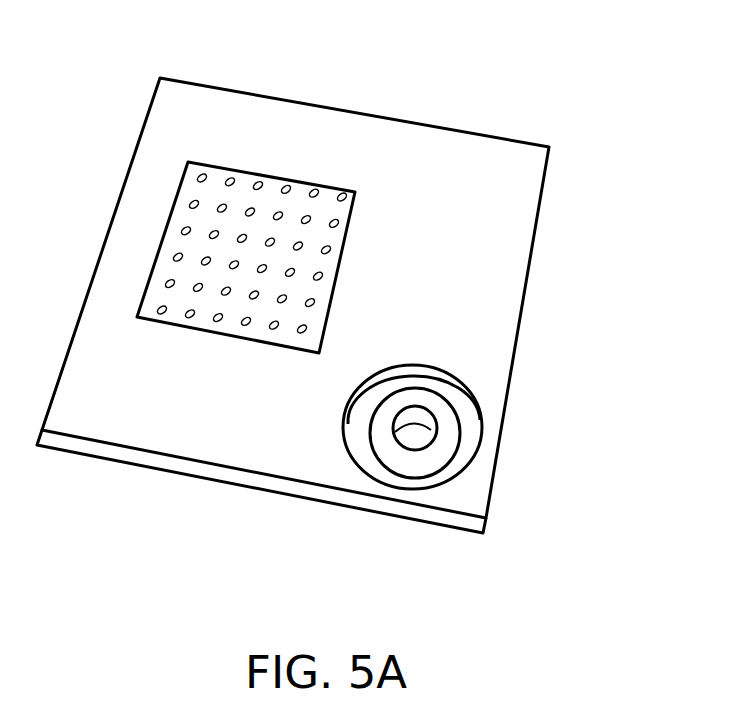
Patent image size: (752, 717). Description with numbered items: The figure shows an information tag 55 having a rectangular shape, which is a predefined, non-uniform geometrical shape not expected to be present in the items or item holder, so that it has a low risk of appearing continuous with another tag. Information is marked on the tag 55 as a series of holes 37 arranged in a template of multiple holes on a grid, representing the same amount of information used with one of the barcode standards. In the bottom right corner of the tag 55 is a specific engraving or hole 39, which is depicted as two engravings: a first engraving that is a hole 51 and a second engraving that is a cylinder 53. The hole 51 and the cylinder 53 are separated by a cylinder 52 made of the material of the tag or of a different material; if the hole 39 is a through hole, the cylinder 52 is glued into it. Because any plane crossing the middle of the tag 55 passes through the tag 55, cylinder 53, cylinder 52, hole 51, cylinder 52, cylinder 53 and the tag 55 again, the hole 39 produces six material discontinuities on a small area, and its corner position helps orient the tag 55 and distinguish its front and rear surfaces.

The tag 55 is at (583, 195).
The holes 37 is at (342, 197).
The hole 39 is at (476, 373).
The hole 51 is at (420, 430).
The cylinder 52 is at (447, 432).
The cylinder 53 is at (462, 458).